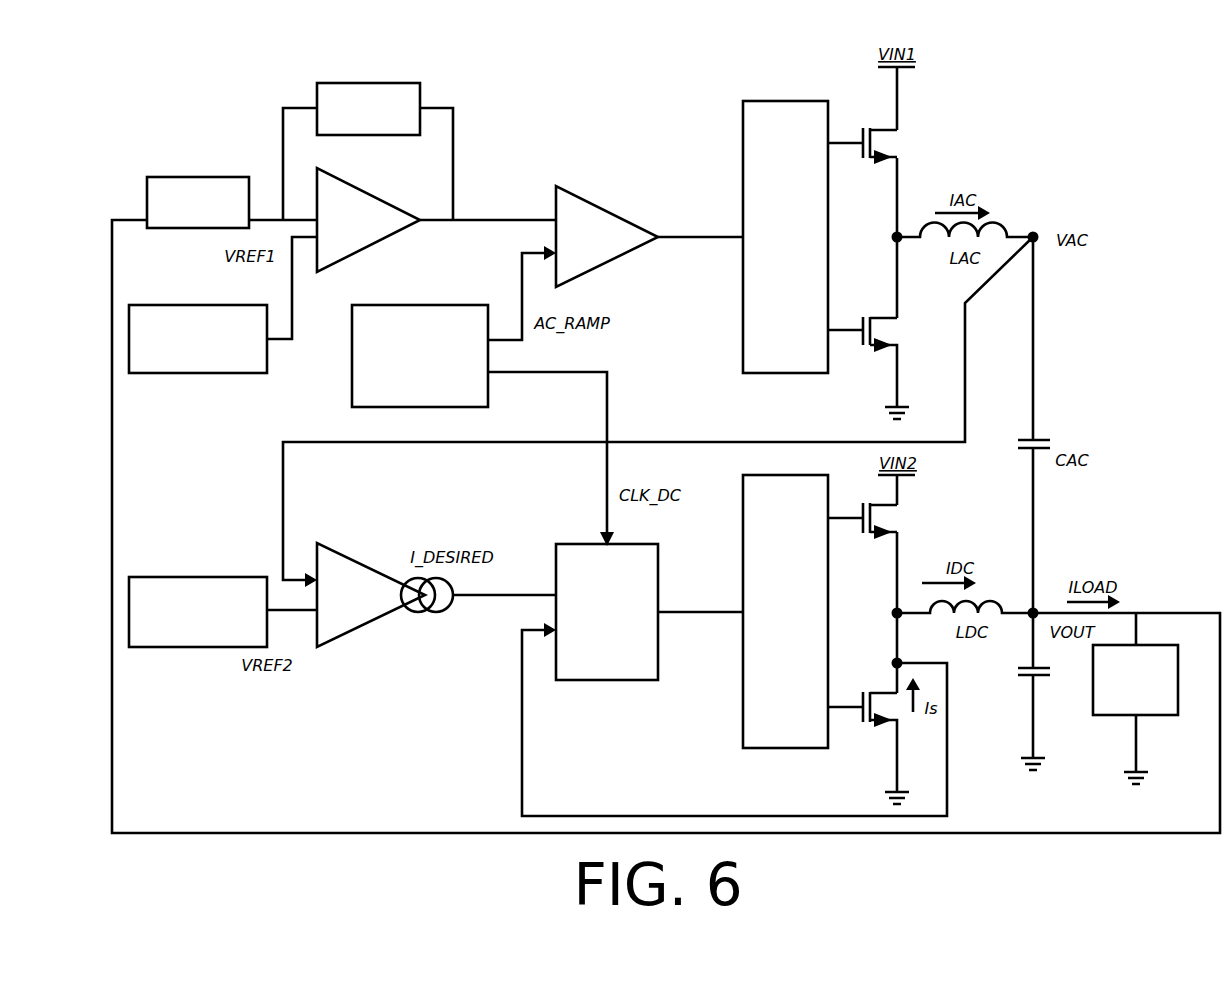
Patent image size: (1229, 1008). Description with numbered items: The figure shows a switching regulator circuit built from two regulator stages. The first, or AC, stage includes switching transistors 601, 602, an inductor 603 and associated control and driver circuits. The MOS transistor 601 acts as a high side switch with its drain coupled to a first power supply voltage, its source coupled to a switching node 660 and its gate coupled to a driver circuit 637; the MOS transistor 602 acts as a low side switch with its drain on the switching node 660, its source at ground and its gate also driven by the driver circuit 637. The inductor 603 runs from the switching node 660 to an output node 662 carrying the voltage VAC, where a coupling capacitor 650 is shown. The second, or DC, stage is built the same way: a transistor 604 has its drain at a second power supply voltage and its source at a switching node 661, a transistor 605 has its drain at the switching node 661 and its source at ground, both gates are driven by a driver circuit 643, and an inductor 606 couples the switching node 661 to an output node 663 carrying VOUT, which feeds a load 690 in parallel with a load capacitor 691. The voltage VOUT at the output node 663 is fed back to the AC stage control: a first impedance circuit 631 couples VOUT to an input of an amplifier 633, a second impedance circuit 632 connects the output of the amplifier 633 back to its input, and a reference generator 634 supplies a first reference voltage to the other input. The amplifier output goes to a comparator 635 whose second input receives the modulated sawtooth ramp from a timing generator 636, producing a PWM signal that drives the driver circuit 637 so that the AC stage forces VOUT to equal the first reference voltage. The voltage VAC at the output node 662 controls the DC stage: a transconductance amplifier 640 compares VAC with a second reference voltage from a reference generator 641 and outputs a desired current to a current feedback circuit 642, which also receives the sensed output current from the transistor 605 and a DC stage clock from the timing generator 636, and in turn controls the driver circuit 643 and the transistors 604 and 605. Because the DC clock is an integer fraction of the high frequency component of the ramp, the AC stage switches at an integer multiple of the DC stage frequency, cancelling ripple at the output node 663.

The MOS transistor 601 is at (900, 146).
The MOS transistor 602 is at (900, 362).
The inductor 603 is at (1000, 224).
The MOS transistor 604 is at (900, 521).
The MOS transistor 605 is at (875, 742).
The inductor 606 is at (975, 605).
The first impedance circuit 631 is at (165, 177).
The second impedance circuit 632 is at (402, 83).
The amplifier 633 is at (335, 176).
The reference generator 634 is at (148, 305).
The comparator 635 is at (556, 186).
The timing generator 636 is at (370, 305).
The driver circuit 637 is at (785, 237).
The transconductance amplifier 640 is at (335, 548).
The reference generator 641 is at (148, 577).
The current feedback circuit 642 is at (607, 612).
The driver circuit 643 is at (785, 611).
The AC coupling capacitor CAC 650 is at (1040, 440).
The switching node 660 is at (893, 232).
The switching node 661 is at (890, 608).
The output node 662 is at (1040, 232).
The output node 663 is at (1040, 607).
The load 690 is at (1135, 692).
The load capacitor CLOAD 691 is at (1009, 685).